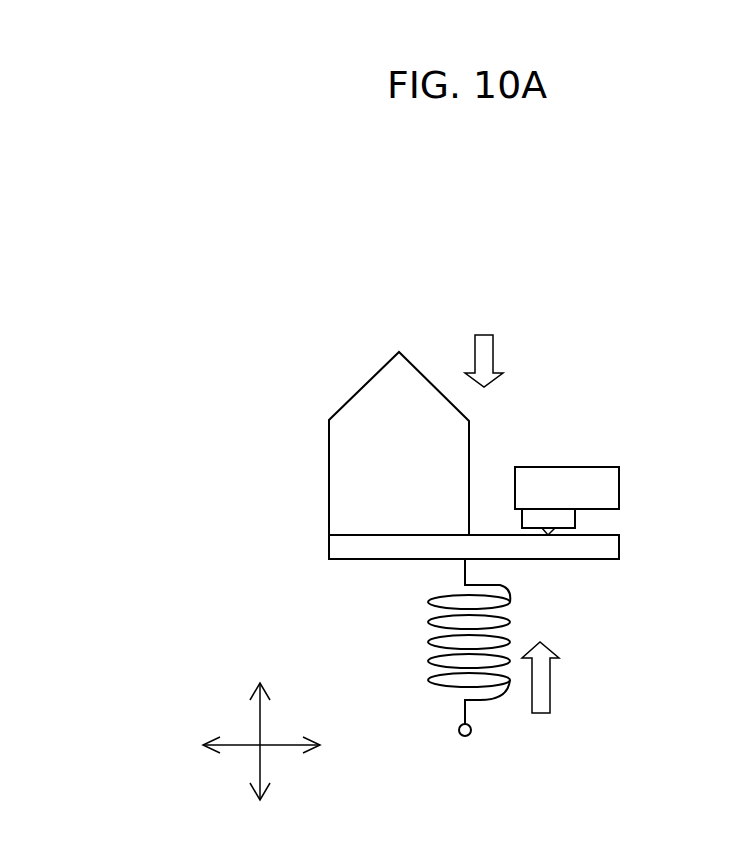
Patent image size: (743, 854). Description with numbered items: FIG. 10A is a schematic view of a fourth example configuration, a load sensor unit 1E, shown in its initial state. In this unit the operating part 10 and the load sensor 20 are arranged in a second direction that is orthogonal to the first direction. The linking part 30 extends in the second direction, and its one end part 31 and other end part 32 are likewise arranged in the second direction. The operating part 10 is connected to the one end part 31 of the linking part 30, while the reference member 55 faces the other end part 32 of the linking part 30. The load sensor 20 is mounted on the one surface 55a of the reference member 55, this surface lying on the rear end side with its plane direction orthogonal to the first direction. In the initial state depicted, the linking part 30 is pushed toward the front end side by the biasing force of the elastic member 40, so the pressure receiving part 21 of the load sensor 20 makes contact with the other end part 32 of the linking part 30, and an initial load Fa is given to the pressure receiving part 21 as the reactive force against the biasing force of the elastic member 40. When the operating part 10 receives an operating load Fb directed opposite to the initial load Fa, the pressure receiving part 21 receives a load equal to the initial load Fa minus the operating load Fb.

The load sensor unit 1E is at (536, 252).
The operating part 10 is at (337, 435).
The load sensor 20 is at (567, 522).
The pressure receiving part 21 is at (557, 537).
The linking part 30 is at (342, 562).
The one end part 31 is at (353, 543).
The other end part 32 is at (580, 552).
The elastic member 40 is at (488, 698).
The reference member 55 is at (608, 485).
The one surface 55a is at (601, 505).